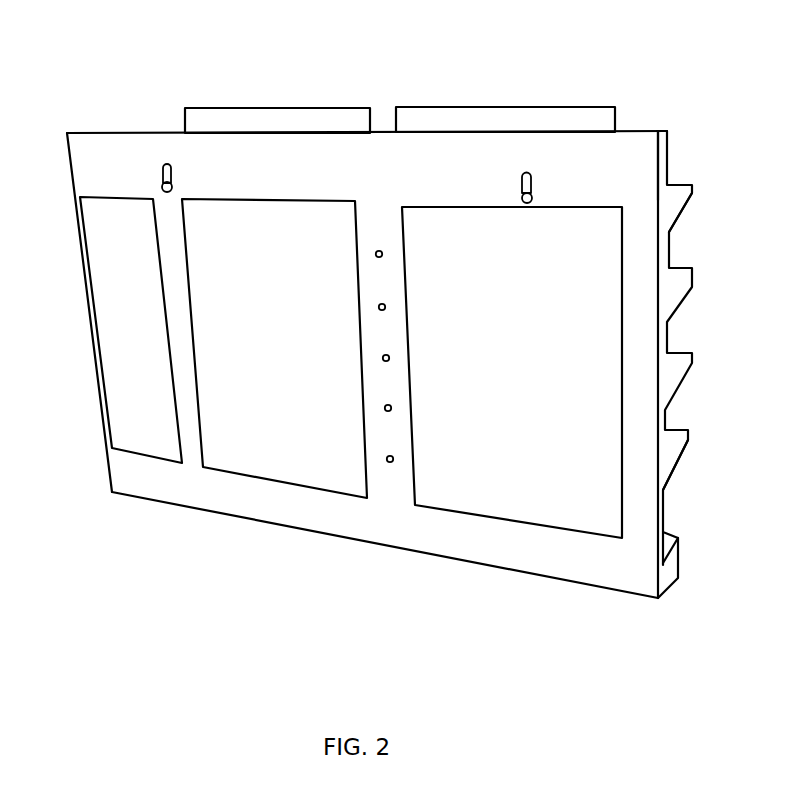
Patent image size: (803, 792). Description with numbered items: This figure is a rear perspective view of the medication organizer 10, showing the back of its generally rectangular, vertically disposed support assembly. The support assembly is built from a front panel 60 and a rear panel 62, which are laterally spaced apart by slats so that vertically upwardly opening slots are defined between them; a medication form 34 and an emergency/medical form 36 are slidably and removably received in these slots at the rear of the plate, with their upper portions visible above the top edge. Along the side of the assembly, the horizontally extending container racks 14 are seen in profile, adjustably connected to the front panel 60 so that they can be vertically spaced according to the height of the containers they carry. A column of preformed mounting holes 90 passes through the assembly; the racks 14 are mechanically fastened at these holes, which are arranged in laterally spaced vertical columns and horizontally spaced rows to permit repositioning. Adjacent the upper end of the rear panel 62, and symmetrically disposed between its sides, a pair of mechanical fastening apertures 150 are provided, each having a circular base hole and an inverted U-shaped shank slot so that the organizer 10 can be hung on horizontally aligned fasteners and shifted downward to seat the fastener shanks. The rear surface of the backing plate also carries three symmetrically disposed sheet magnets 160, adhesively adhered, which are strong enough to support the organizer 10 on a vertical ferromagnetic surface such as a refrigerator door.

The organizer 10 is at (367, 305).
The medication form 34 is at (185, 110).
The emergency/medical form 36 is at (543, 107).
The rear panel 62 is at (625, 163).
The front panel 60 is at (673, 165).
The container rack 14 is at (675, 200).
The mounting holes 90 is at (660, 358).
The mechanical fastening apertures 150 is at (172, 172).
The sheet magnets 160 is at (100, 425).